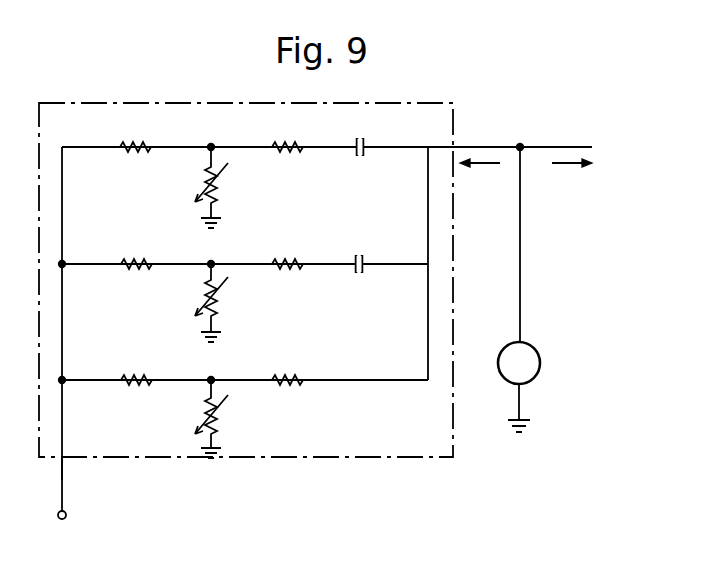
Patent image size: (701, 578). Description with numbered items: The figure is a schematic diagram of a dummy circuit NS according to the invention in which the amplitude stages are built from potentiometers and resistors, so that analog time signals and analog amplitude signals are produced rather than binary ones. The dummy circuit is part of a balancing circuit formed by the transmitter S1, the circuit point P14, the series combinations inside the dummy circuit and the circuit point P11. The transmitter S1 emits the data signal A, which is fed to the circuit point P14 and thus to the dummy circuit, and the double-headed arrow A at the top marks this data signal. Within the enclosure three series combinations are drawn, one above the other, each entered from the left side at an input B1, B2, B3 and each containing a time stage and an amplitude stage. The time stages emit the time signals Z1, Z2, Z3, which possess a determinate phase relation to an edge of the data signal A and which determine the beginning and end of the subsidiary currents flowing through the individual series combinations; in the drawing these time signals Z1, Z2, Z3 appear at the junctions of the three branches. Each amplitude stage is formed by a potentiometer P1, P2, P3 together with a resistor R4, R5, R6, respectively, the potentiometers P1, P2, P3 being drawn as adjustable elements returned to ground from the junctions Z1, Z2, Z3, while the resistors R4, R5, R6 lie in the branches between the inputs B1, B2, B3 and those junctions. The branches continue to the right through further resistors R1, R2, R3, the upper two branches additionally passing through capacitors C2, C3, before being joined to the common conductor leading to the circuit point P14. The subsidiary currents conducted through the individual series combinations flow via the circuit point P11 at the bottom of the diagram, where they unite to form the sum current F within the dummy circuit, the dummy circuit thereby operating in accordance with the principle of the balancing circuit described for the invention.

The network (dash-dot enclosure) NS is at (108, 103).
The input terminal B3 is at (77, 133).
The resistor R6 is at (135, 134).
The time signal Z3 is at (231, 134).
The resistor R3 is at (287, 134).
The capacitor C3 is at (358, 134).
The potentiometer P3 is at (221, 187).
The input terminal B2 is at (76, 251).
The resistor R5 is at (136, 251).
The time signal Z2 is at (231, 251).
The resistor R2 is at (287, 251).
The capacitor C2 is at (358, 250).
The potentiometer P2 is at (219, 303).
The input terminal B1 is at (76, 367).
The resistor R4 is at (136, 367).
The time signal Z1 is at (231, 367).
The resistor R1 is at (287, 367).
The potentiometer P1 is at (217, 419).
The circuit point P14 is at (517, 231).
The data signal A is at (526, 169).
The transmitter S1 is at (519, 387).
The sum current F is at (53, 476).
The circuit point P11 is at (75, 513).